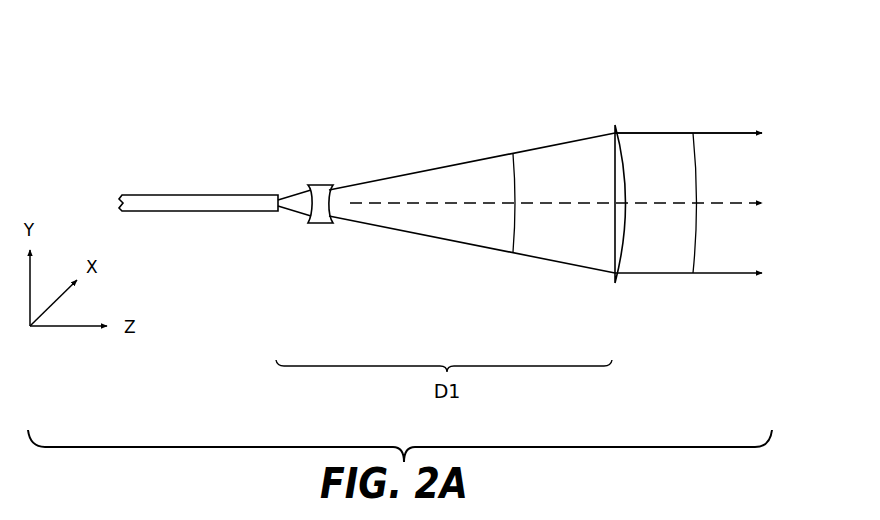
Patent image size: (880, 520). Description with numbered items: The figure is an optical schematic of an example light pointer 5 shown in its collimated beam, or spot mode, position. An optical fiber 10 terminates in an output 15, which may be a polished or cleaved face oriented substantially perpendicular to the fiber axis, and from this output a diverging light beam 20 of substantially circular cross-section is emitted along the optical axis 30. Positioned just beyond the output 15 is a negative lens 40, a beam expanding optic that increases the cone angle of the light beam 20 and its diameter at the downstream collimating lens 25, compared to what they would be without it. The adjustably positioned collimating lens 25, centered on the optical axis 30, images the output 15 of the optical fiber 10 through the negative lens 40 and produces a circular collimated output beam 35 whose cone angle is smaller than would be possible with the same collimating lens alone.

The light pointer 5 is at (647, 45).
The optical fiber 10 is at (226, 195).
The optical fiber output 15 is at (281, 197).
The diverging light beam 20 is at (532, 264).
The collimating lens 25 is at (614, 129).
The optical axis 30 is at (421, 205).
The collimated output beam 35 is at (723, 277).
The negative lens 40 is at (321, 223).